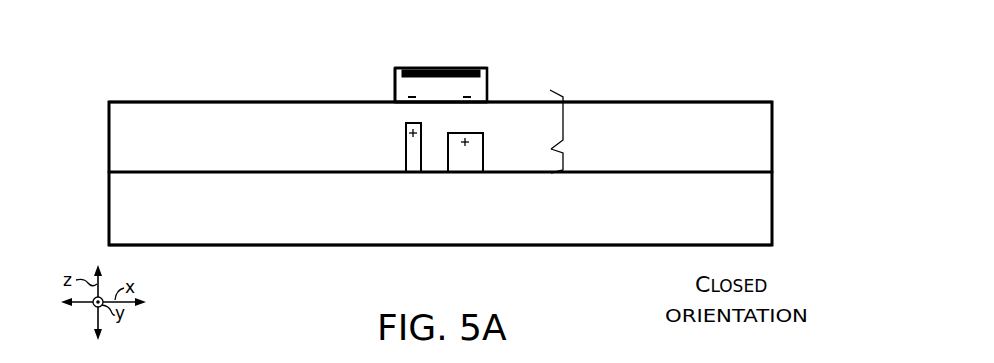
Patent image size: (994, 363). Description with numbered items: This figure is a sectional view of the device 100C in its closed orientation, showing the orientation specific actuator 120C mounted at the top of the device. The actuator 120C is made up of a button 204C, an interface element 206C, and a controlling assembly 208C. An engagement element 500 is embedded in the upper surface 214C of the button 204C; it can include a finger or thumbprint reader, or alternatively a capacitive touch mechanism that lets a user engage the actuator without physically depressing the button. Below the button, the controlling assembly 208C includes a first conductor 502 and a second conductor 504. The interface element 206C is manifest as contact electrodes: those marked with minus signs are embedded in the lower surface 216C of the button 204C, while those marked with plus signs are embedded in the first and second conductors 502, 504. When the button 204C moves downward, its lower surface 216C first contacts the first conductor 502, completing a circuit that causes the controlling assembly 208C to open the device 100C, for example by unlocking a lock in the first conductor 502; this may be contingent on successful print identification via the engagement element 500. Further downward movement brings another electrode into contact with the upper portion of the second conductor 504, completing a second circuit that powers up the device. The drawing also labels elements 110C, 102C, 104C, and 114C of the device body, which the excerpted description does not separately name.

The device 100C is at (746, 58).
The housing 110C is at (188, 99).
The first housing portion 102C is at (189, 147).
The second housing portion 104C is at (189, 212).
The bottom surface 114C is at (280, 255).
The orientation specific actuator 120C is at (474, 48).
The upper surface 214C is at (398, 64).
The button 204C is at (403, 88).
The engagement element 500 is at (427, 70).
The lower surface 216C is at (405, 110).
The first conductor 502 is at (412, 155).
The second conductor 504 is at (460, 162).
The interface element 206C is at (563, 118).
The controlling assembly 208C is at (563, 158).